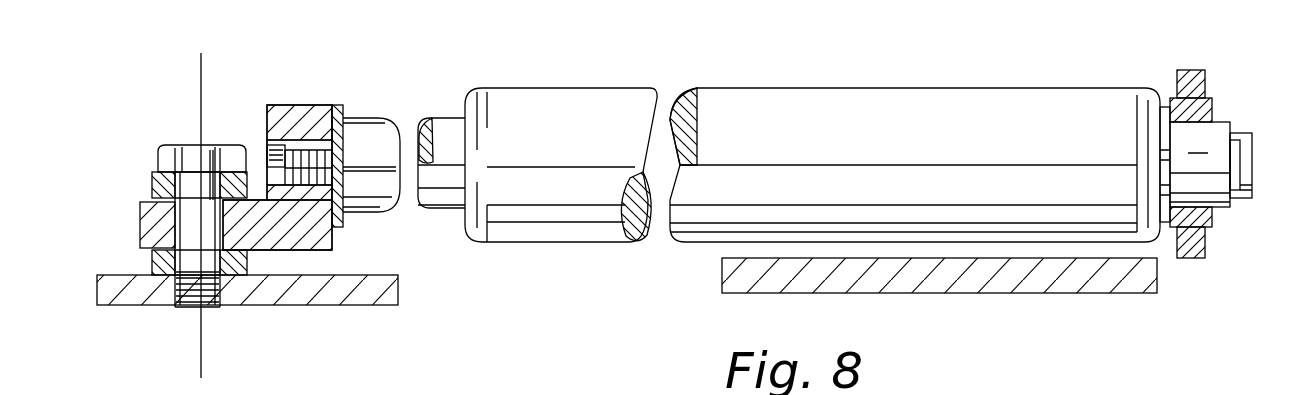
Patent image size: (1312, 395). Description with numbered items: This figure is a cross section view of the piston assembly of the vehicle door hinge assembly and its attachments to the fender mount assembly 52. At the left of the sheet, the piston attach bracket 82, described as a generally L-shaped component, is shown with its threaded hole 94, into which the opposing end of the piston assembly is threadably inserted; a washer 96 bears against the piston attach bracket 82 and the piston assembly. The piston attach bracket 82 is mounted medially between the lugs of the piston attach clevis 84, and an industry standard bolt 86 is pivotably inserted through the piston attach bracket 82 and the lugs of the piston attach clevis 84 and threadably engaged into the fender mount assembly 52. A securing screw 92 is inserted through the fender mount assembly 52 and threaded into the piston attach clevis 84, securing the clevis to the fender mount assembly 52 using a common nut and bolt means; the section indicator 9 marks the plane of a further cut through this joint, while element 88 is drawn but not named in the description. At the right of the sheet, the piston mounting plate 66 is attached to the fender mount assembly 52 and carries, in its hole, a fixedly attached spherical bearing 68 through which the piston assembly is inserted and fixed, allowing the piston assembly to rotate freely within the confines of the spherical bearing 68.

The section line 9- 9 is at (192, 70).
The fender mount assembly 52 is at (350, 308).
The piston mounting plate 66 is at (1207, 82).
The spherical bearing 68 is at (1212, 112).
The piston attach bracket 82 is at (322, 104).
The piston attach clevis 84 is at (148, 252).
The bolt 86 is at (226, 146).
The spacer block 88 is at (192, 237).
The securing screw 92 is at (208, 185).
The threaded hole 94 is at (275, 140).
The washer 96 is at (340, 227).